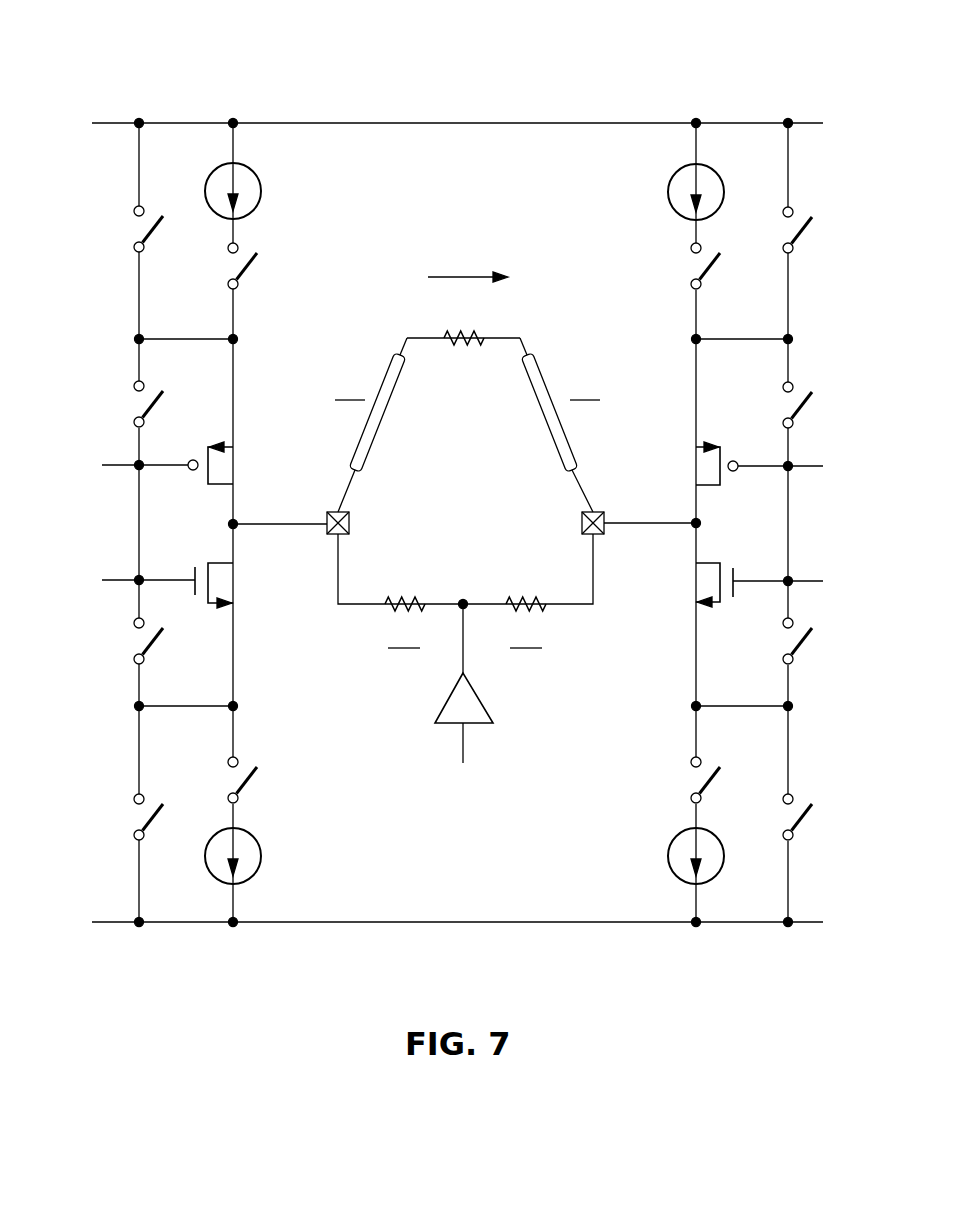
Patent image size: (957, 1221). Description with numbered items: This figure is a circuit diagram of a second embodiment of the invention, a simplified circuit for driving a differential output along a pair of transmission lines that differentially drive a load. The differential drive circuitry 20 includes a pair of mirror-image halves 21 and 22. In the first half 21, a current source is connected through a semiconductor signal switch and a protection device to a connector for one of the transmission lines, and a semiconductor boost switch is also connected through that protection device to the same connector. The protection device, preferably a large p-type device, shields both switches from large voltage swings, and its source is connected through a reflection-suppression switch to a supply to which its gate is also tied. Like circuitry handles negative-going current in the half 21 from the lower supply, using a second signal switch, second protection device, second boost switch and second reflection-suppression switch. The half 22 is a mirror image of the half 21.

The differential drive circuitry 20 is at (457, 517).
The first half 21 is at (208, 923).
The second half 22 is at (767, 923).